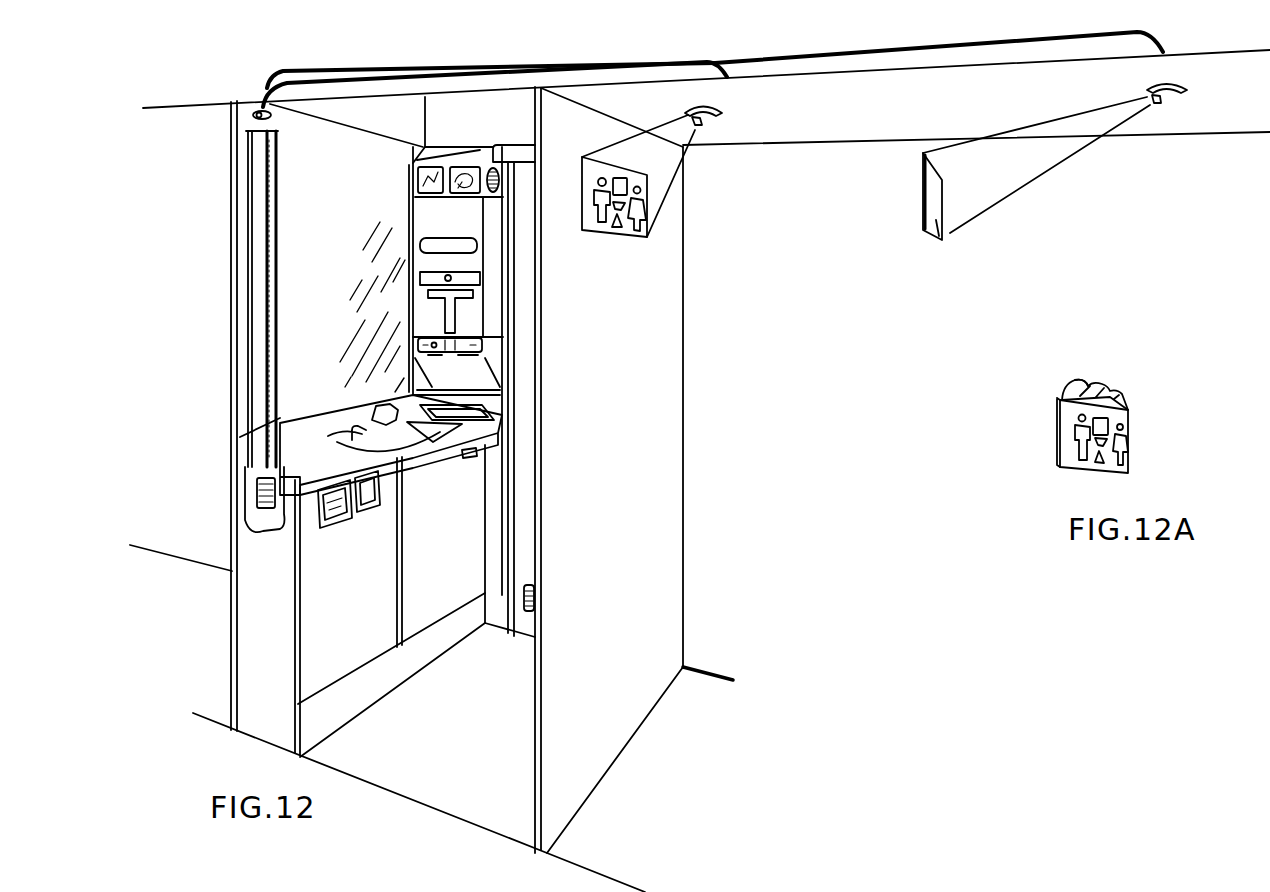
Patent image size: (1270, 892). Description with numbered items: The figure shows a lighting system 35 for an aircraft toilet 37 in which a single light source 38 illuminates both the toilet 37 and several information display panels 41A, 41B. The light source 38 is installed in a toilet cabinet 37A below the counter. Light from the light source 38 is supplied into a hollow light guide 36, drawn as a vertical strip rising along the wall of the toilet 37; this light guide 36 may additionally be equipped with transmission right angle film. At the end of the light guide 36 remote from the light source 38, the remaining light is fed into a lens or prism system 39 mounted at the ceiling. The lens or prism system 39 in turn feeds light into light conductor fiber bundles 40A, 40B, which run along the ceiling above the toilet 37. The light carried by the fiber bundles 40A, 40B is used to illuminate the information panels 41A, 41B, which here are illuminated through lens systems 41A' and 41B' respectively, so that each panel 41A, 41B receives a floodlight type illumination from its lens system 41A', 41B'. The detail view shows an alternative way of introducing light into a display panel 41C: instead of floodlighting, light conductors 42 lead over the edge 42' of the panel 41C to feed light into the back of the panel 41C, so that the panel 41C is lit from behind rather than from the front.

In FIG. 12, the lighting system 35 is at (168, 239).
In FIG. 12, the hollow light guide 36 is at (266, 403).
In FIG. 12, the toilet 37 is at (466, 748).
In FIG. 12, the toilet cabinet 37A is at (370, 593).
In FIG. 12, the light source 38 is at (263, 516).
In FIG. 12, the lens or prism system 39 is at (255, 118).
In FIG. 12, the light conductor fiber bundle 40A is at (418, 76).
In FIG. 12, the light conductor fiber bundle 40B is at (700, 55).
In FIG. 12, the information display panel 41A is at (638, 201).
In FIG. 12, the lens system 41A' is at (728, 150).
In FIG. 12, the information display panel 41B is at (1000, 182).
In FIG. 12, the lens system 41B' is at (1187, 140).
In FIG. 12A, the display panel 41C is at (1146, 445).
In FIG. 12A, the light conductors 42 is at (1115, 374).
In FIG. 12A, the edge of the panel 42' is at (1076, 362).